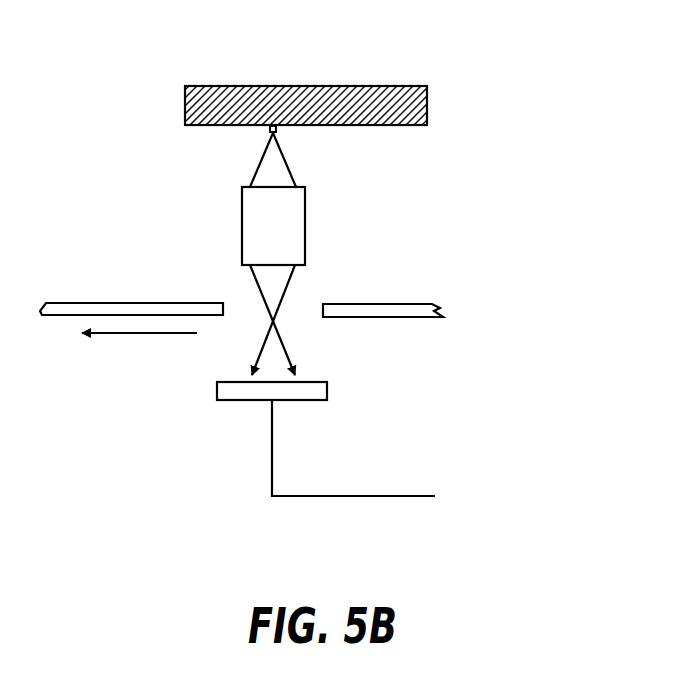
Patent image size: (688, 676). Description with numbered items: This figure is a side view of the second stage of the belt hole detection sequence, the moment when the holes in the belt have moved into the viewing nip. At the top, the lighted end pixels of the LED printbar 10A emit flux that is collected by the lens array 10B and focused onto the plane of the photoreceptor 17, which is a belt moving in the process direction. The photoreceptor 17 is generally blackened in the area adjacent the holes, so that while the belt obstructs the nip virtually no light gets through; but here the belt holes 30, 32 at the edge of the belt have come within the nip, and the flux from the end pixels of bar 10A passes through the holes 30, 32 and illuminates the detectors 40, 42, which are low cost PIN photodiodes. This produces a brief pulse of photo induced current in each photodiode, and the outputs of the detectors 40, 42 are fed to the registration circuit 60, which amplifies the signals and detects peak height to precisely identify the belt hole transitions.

The LED printbar 10A is at (303, 86).
The lens array 10B is at (242, 227).
The photoreceptor 17 is at (393, 304).
The belt hole 30 is at (316, 290).
The belt hole 32 is at (301, 310).
The detector 40 is at (224, 417).
The detector 42 is at (242, 400).
The registration circuit 60 is at (437, 455).